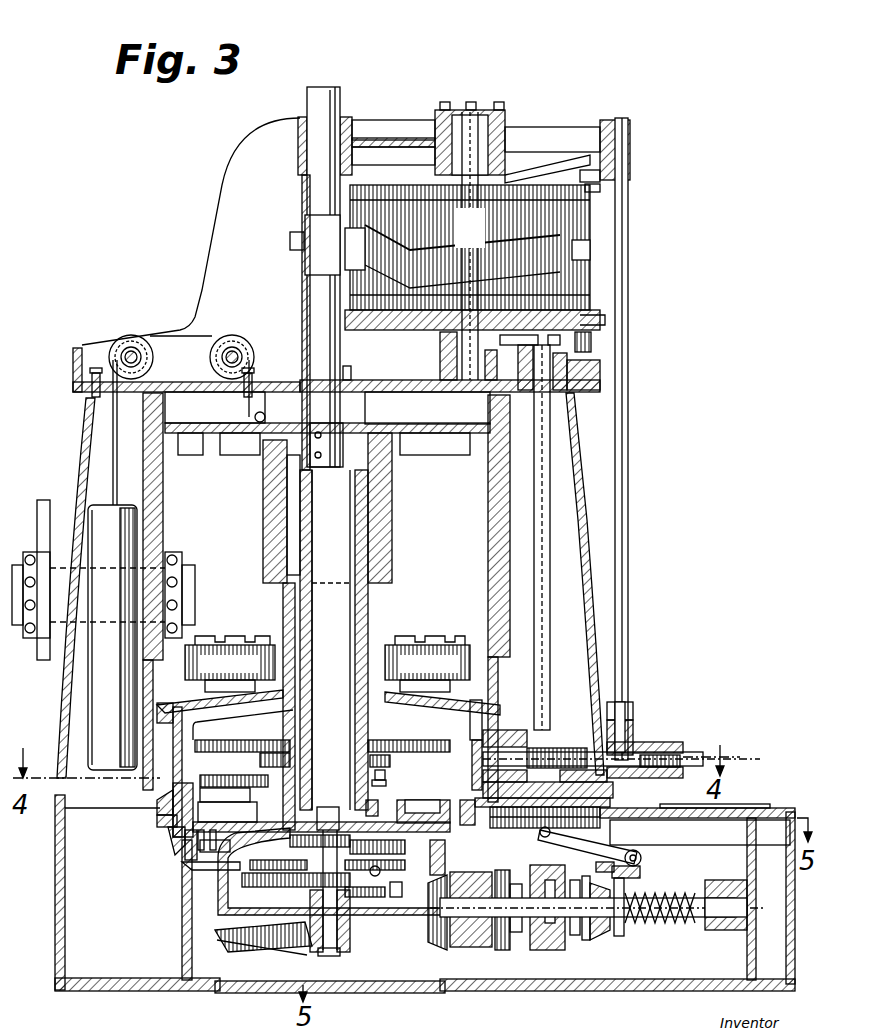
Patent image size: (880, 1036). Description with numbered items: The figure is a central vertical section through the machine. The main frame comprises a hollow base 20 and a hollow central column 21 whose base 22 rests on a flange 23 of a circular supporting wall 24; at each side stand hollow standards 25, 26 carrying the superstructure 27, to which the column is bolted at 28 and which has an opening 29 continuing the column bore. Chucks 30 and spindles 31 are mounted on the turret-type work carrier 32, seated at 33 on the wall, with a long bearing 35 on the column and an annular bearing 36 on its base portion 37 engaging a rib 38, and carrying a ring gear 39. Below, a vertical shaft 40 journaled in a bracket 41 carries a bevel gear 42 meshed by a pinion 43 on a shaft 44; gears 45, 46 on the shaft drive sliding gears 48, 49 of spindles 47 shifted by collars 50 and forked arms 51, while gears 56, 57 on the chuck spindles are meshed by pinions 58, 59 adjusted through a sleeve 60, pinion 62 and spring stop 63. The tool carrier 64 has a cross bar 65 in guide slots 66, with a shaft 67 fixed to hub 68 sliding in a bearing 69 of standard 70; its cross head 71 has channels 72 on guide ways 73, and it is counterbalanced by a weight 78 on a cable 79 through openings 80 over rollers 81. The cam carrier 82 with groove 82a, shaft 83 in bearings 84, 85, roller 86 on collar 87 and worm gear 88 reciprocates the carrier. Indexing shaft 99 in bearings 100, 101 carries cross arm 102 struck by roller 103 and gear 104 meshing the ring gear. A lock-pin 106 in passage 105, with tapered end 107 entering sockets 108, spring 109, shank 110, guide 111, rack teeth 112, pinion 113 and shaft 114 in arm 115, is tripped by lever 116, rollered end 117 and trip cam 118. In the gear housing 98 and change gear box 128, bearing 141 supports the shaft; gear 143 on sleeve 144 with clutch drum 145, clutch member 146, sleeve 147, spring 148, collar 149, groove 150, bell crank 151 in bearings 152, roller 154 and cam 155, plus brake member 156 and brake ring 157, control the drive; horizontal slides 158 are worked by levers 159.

The base 20 is at (56, 932).
The central vertical cylindrical column 21 is at (368, 603).
The base of the column 22 is at (200, 870).
The flange 23 is at (190, 866).
The circular supporting wall 24 is at (181, 906).
The vertical hollow standard 25 is at (60, 680).
The vertical hollow standard 26 is at (590, 568).
The stationary super-structure 27 is at (88, 354).
The bolt connection 28 is at (350, 370).
The opening 29 is at (368, 381).
The chuck 30 is at (327, 664).
The chuck spindle 31 is at (242, 763).
The rotatable chuck or work carrier 32 is at (225, 763).
The seat 33 is at (188, 852).
The cylindrical bearing 35 is at (285, 635).
The annular cylindrical bearing 36 is at (258, 808).
The horizontal base portion 37 is at (170, 835).
The annular bearing rib 38 is at (240, 796).
The ring gear 39 is at (160, 823).
The vertical shaft 40 is at (331, 950).
The depending bracket 41 is at (222, 893).
The beveled gear 42 is at (250, 945).
The driving pinion 43 is at (436, 945).
The shaft 44 is at (478, 948).
The gear 45 is at (365, 897).
The gear 46 is at (328, 808).
The rotatable spindle 47 is at (356, 771).
The gear 48 is at (255, 872).
The gear 49 is at (287, 888).
The collar 50 is at (376, 878).
The forked arm 51 is at (401, 894).
The gear 56 is at (423, 811).
The gear 57 is at (420, 745).
The pinion 58 is at (367, 758).
The pinion 59 is at (352, 738).
The sleeve 60 is at (385, 776).
The pinion 62 is at (372, 808).
The leaf spring stop 63 is at (370, 785).
The cylindrical tool carrier 64 is at (392, 548).
The cross bar 65 is at (328, 462).
The vertical guide slot 66 is at (265, 468).
The vertical shaft 67 is at (310, 292).
The hub portion 68 is at (290, 480).
The bearing 69 is at (350, 118).
The standard 70 is at (213, 229).
The cross head 71 is at (204, 435).
The channel portion 72 is at (492, 455).
The guide way 73 is at (163, 500).
The weight 78 is at (112, 637).
The cable 79 is at (112, 478).
The opening 80 is at (258, 372).
The roller 81 is at (131, 340).
The cam carrier 82 is at (472, 257).
The groove 82a is at (578, 246).
The vertical shaft 83 is at (500, 124).
The bearing 84 is at (427, 408).
The bearing 85 is at (448, 114).
The roller 86 is at (372, 238).
The collar 87 is at (305, 232).
The worm gear 88 is at (600, 316).
The gear housing 98 is at (735, 808).
The vertical shaft 99 is at (550, 452).
The bearing 100 is at (578, 392).
The bearing 101 is at (548, 790).
The cross arm 102 is at (566, 372).
The roller 103 is at (594, 340).
The gear 104 is at (612, 835).
The passage 105 is at (525, 745).
The lock-pin 106 is at (535, 748).
The tapered end 107 is at (480, 710).
The socket 108 is at (474, 740).
The spring 109 is at (583, 780).
The shank portion 110 is at (618, 778).
The guide member 111 is at (635, 740).
The rack teeth 112 is at (670, 752).
The pinion 113 is at (660, 768).
The vertical shaft 114 is at (629, 472).
The arm 115 is at (568, 140).
The trip lever 116 is at (602, 178).
The rollered end 117 is at (602, 188).
The trip cam 118 is at (556, 178).
The change gear box 128 is at (770, 820).
The bearing 141 is at (455, 948).
The gear 143 is at (502, 952).
The sleeve 144 is at (517, 934).
The clutch drum 145 is at (540, 952).
The clutch member 146 is at (574, 937).
The sleeve 147 is at (586, 942).
The spring 148 is at (652, 898).
The collar 149 is at (710, 928).
The annularly grooved portion 150 is at (621, 926).
The forked bell crank lever 151 is at (612, 855).
The bearing 152 is at (642, 862).
The roller 154 is at (575, 842).
The cam 155 is at (520, 830).
The brake member 156 is at (600, 940).
The brake ring 157 is at (600, 872).
The horizontal tool slide 158 is at (196, 594).
The lever 159 is at (182, 412).